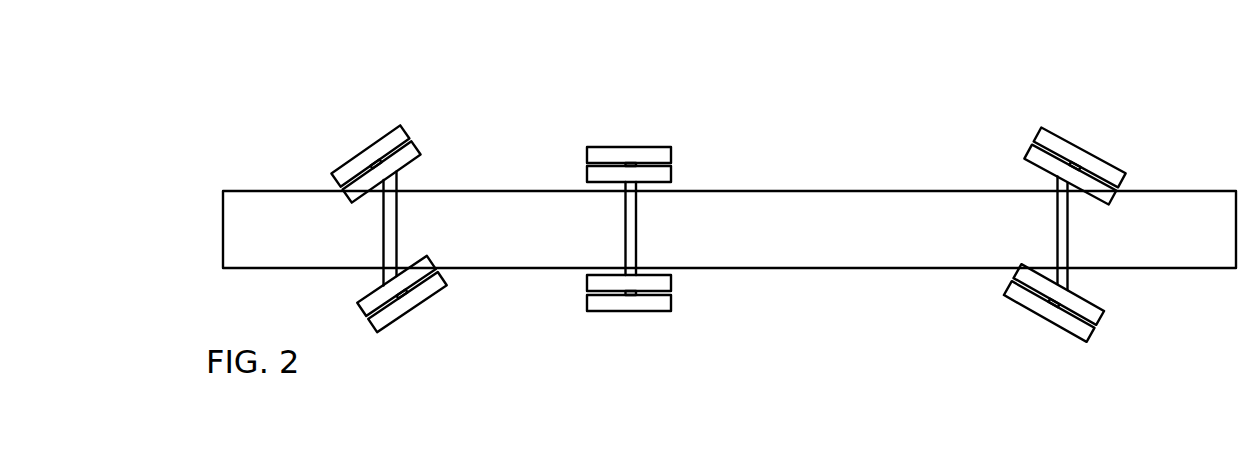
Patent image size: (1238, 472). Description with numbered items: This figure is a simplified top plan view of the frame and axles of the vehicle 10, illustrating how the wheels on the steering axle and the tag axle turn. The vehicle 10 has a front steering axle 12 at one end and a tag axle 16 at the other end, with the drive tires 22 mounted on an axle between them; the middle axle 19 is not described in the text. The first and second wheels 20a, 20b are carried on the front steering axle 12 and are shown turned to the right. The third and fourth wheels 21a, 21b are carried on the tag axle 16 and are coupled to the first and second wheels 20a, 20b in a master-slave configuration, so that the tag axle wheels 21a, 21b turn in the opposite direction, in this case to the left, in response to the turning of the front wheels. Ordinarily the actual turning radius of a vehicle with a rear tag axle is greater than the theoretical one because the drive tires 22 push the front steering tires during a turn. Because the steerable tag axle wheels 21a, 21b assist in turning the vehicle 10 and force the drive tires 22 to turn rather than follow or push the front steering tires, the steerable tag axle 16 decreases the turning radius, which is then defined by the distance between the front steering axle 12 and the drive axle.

The vehicle 10 is at (785, 318).
The front steering axle 12 is at (1060, 205).
The tag axle 16 is at (393, 186).
The middle axle 19 is at (627, 218).
The first wheel 20a is at (1032, 132).
The second wheel 20b is at (1058, 322).
The third wheel 21a is at (411, 129).
The fourth wheel 21b is at (402, 307).
The drive tires 22 is at (672, 172).